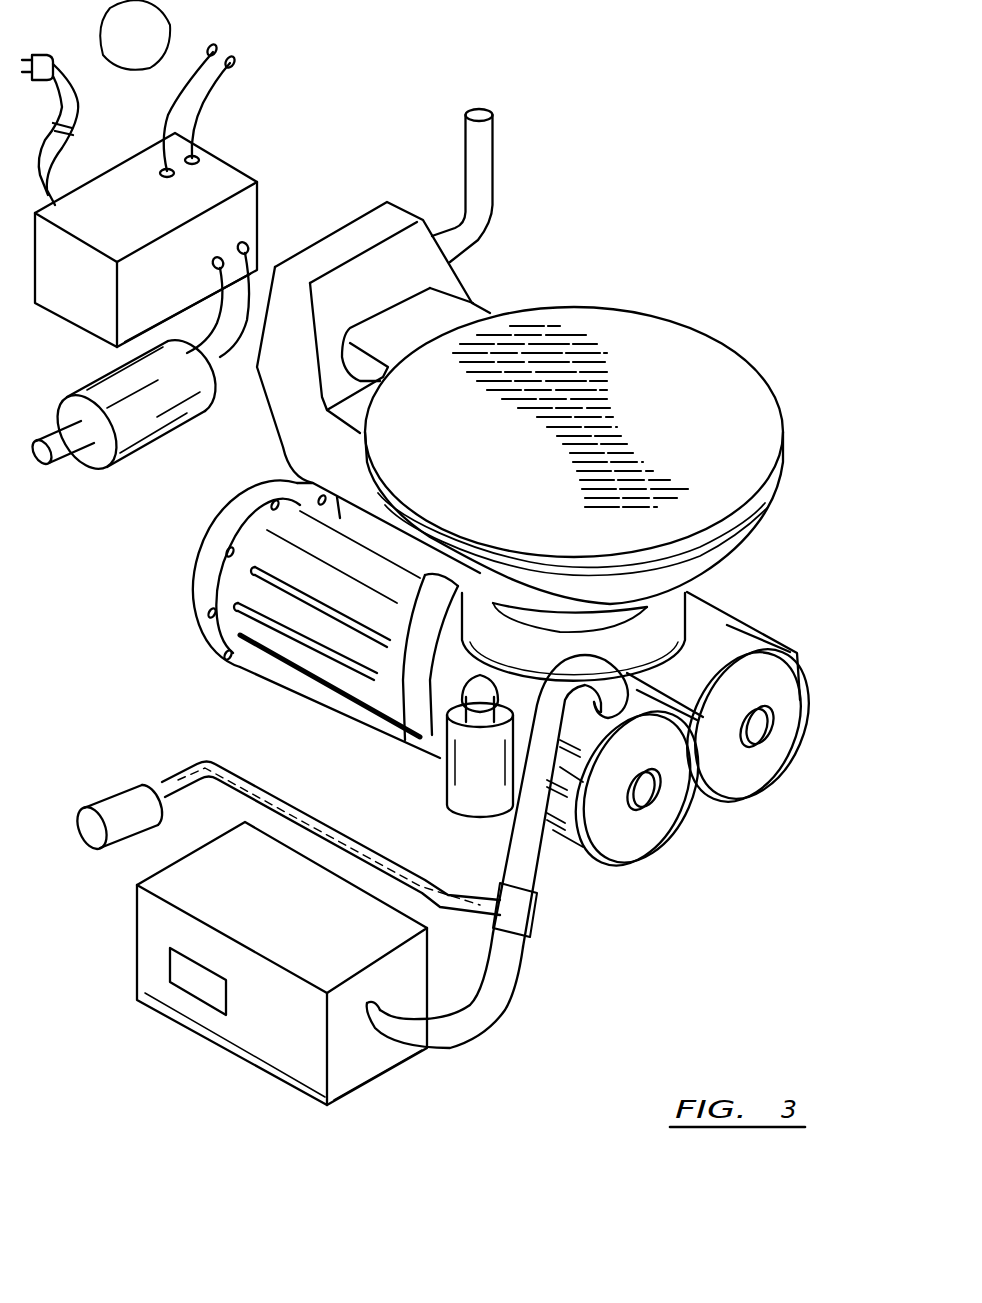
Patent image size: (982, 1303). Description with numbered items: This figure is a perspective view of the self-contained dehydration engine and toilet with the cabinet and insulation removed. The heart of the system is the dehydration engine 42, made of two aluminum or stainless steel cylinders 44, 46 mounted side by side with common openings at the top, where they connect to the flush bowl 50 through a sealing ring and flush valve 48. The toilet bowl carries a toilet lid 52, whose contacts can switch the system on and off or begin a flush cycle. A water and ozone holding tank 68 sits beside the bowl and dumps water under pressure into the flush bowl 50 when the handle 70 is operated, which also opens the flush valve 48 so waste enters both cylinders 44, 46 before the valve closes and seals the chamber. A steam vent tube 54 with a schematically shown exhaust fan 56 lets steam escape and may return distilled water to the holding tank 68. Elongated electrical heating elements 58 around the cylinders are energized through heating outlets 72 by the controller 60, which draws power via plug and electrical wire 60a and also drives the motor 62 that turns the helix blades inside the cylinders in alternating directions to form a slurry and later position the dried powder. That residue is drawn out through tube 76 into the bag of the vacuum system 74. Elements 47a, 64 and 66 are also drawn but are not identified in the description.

The dehydration engine 42 is at (737, 608).
The cylinder 44 is at (750, 630).
The cylinder 46 is at (248, 500).
The conduit fitting 47a is at (113, 793).
The flush valve 48 is at (673, 607).
The flush bowl 50 is at (740, 530).
The toilet lid 52 is at (747, 400).
The steam vent tube 54 is at (395, 700).
The exhaust fan 56 is at (430, 787).
The heating elements 58 is at (270, 565).
The controller 60 is at (133, 165).
The plug and electrical wire 60a is at (70, 72).
The motor 62 is at (110, 385).
The wheel 64 is at (760, 728).
The wheel 66 is at (650, 793).
The water and ozone holding tank 68 is at (375, 218).
The handle 70 is at (500, 168).
The heating outlets 72 is at (262, 62).
The vacuum system 74 is at (263, 1073).
The tube 76 is at (518, 997).